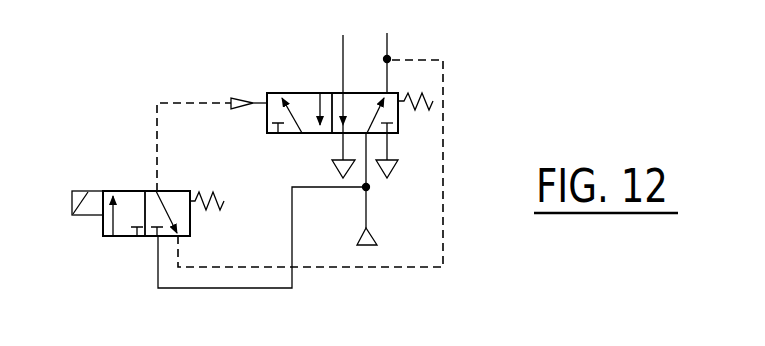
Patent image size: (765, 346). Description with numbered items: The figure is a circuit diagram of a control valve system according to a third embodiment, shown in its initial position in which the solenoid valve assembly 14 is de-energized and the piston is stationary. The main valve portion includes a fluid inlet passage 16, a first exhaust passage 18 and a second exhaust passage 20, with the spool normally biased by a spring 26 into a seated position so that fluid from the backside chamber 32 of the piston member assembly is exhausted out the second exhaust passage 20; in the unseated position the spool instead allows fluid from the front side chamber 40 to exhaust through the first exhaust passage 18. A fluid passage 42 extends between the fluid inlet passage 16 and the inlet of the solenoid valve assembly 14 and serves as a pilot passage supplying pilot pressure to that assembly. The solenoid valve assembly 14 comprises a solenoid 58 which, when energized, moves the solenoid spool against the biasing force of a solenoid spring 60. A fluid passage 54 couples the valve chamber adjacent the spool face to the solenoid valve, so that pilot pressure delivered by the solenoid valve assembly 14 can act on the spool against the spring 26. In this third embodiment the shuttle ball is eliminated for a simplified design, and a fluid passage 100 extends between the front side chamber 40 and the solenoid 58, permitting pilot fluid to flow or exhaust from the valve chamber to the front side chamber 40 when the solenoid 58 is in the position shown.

The solenoid valve assembly 14 is at (128, 236).
The fluid inlet passage 16 is at (367, 212).
The first exhaust passage 18 is at (390, 148).
The second exhaust passage 20 is at (341, 147).
The spring 26 is at (432, 101).
The backside chamber 32 is at (342, 42).
The front side chamber 40 is at (390, 42).
The fluid passage 42 is at (247, 288).
The fluid passage 54 is at (259, 103).
The solenoid 58 is at (96, 191).
The solenoid spring 60 is at (223, 204).
The fluid passage 100 is at (445, 138).